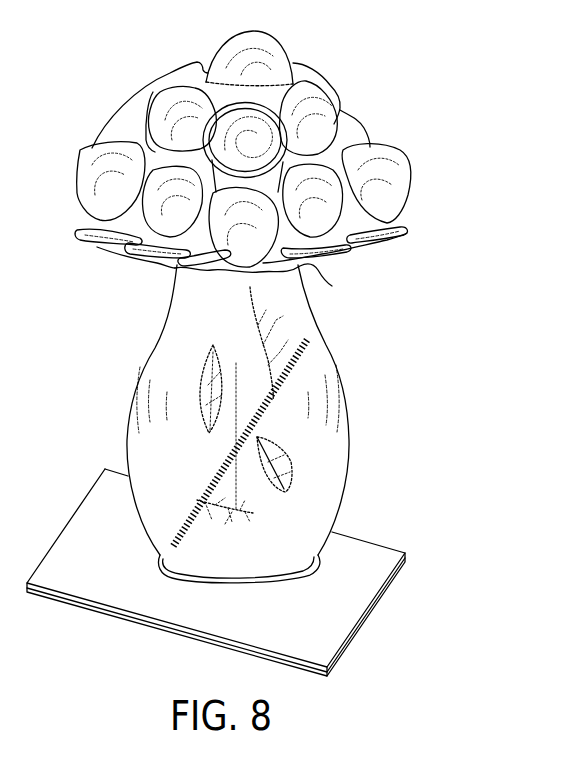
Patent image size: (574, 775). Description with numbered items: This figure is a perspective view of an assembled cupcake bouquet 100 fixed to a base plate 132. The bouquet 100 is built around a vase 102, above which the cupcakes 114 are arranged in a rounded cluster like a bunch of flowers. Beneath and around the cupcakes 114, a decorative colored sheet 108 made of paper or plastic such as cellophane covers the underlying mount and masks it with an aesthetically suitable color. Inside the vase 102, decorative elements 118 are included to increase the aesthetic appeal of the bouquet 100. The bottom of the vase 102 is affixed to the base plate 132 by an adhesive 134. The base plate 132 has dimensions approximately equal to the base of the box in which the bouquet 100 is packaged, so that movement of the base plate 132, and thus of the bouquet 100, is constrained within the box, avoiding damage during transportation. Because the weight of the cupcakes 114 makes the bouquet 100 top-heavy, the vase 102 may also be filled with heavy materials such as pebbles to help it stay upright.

The bouquet 100 is at (461, 94).
The vase 102 is at (289, 479).
The decorative colored sheet 108 is at (318, 270).
The cupcakes 114 is at (395, 176).
The decorative elements 118 is at (262, 413).
The base plate 132 is at (385, 605).
The adhesive 134 is at (206, 583).